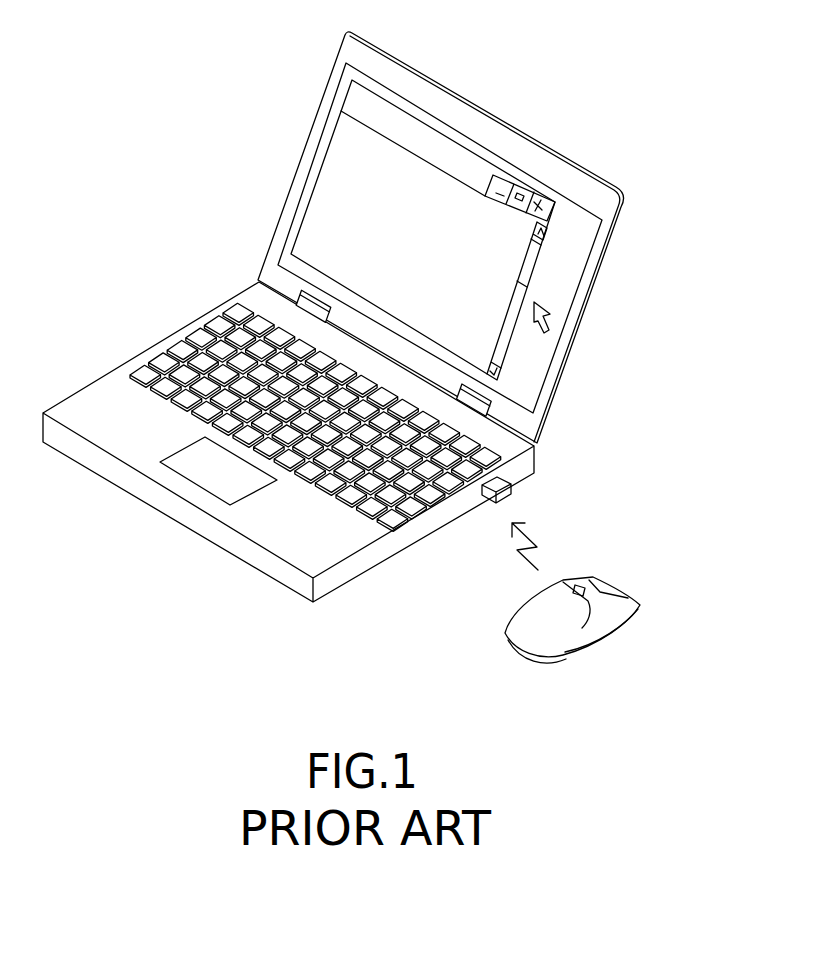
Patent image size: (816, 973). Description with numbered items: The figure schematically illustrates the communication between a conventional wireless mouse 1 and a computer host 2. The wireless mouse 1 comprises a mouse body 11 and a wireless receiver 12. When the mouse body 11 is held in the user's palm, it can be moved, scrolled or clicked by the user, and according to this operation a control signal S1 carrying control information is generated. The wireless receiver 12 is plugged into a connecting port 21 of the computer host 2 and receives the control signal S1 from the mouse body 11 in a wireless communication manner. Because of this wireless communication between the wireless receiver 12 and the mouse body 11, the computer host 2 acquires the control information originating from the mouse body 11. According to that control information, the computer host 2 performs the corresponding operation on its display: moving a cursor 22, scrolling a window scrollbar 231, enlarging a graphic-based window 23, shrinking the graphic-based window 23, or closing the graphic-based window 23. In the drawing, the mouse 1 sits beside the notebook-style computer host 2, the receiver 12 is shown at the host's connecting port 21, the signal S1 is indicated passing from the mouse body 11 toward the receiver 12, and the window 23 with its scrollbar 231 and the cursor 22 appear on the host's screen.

The wireless mouse 1 is at (594, 614).
The mouse body 11 is at (559, 640).
The wireless receiver 12 is at (512, 484).
The computer host 2 is at (355, 317).
The connecting port 21 is at (482, 487).
The cursor 22 is at (538, 300).
The graphic-based window 23 is at (423, 230).
The window scrollbar 231 is at (527, 270).
The control signal S1 is at (515, 556).